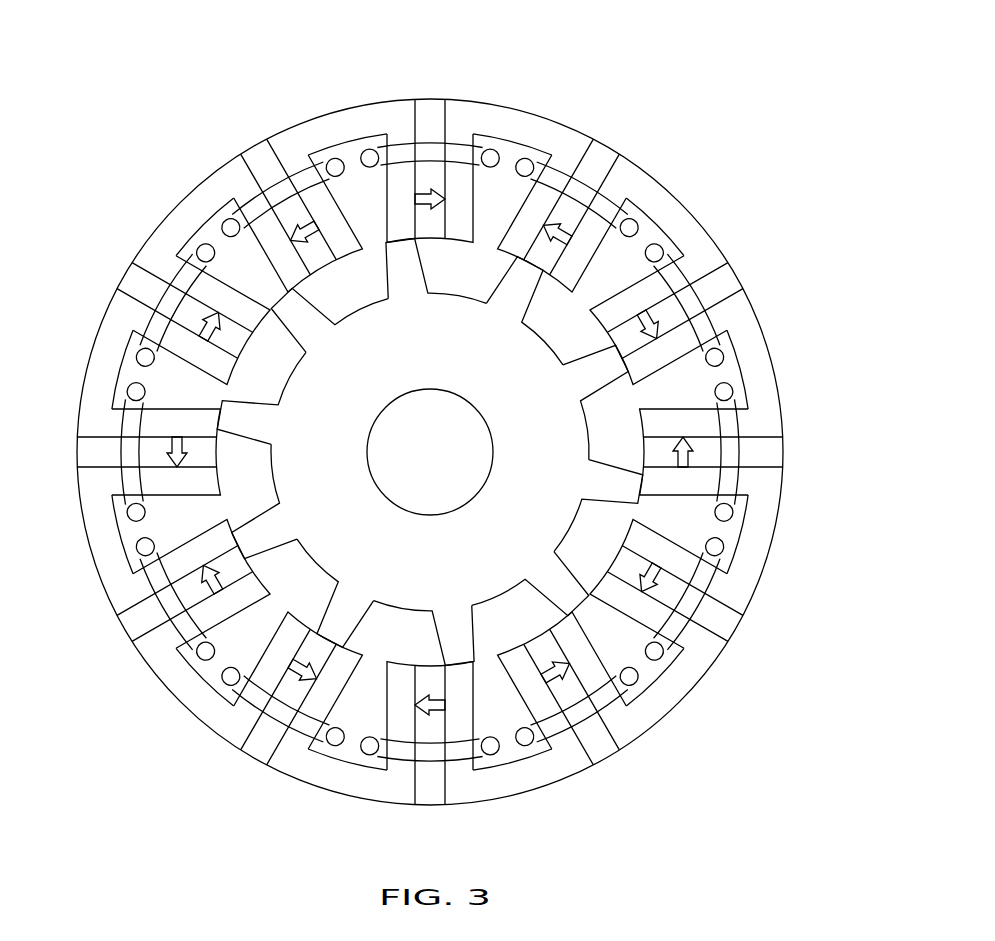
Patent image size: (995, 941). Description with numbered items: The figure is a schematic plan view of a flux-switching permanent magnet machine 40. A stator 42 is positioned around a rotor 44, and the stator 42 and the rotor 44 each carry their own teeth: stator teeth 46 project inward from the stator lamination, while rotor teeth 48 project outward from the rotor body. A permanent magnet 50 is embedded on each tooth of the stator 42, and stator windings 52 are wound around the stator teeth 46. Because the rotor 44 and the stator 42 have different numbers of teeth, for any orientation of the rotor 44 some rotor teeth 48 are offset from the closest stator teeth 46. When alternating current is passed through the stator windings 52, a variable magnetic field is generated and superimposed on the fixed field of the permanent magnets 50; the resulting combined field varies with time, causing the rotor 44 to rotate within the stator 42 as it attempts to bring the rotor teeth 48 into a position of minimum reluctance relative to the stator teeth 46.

The flux-switching permanent magnet machine 40 is at (693, 53).
The stator 42 is at (648, 192).
The rotor 44 is at (430, 452).
The stator teeth 46 is at (177, 486).
The rotor teeth 48 is at (442, 640).
The permanent magnet 50 is at (568, 210).
The stator windings 52 is at (173, 267).